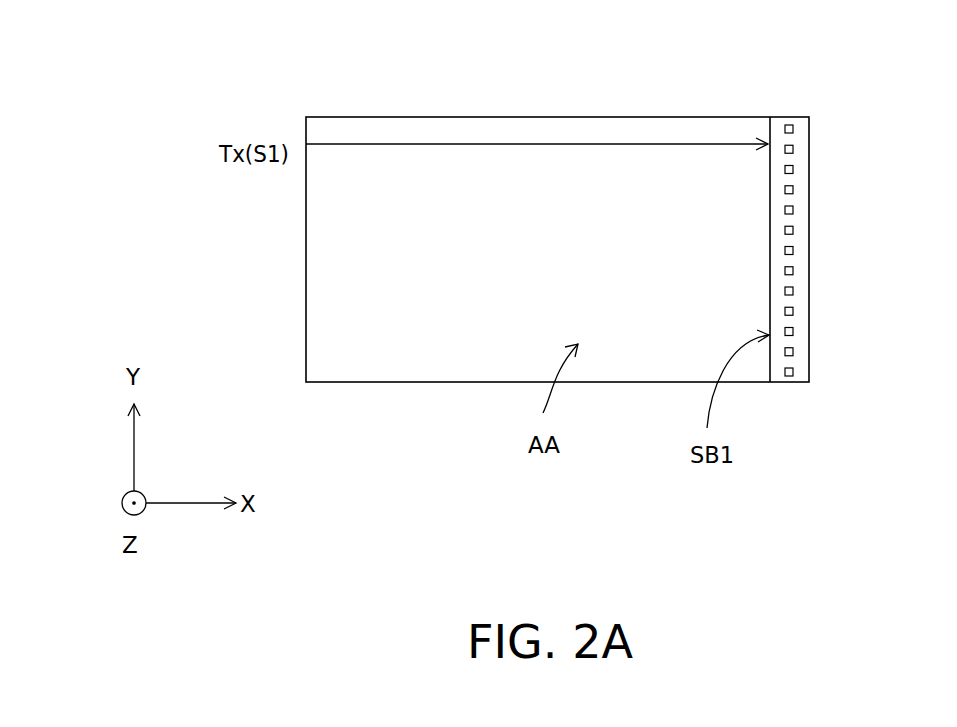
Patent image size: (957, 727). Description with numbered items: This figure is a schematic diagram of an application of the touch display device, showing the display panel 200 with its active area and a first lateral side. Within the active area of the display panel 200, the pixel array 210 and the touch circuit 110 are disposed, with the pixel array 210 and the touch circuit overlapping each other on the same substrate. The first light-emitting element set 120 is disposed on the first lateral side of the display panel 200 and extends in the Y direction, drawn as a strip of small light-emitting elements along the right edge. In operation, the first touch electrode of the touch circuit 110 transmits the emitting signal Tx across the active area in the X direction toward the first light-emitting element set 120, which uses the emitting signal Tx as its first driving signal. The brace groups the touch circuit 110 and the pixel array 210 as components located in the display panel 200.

The display panel 200 is at (722, 116).
The touch circuit 110 is at (835, 115).
The pixel array 210 is at (593, 234).
The first light-emitting element set 120 is at (803, 194).